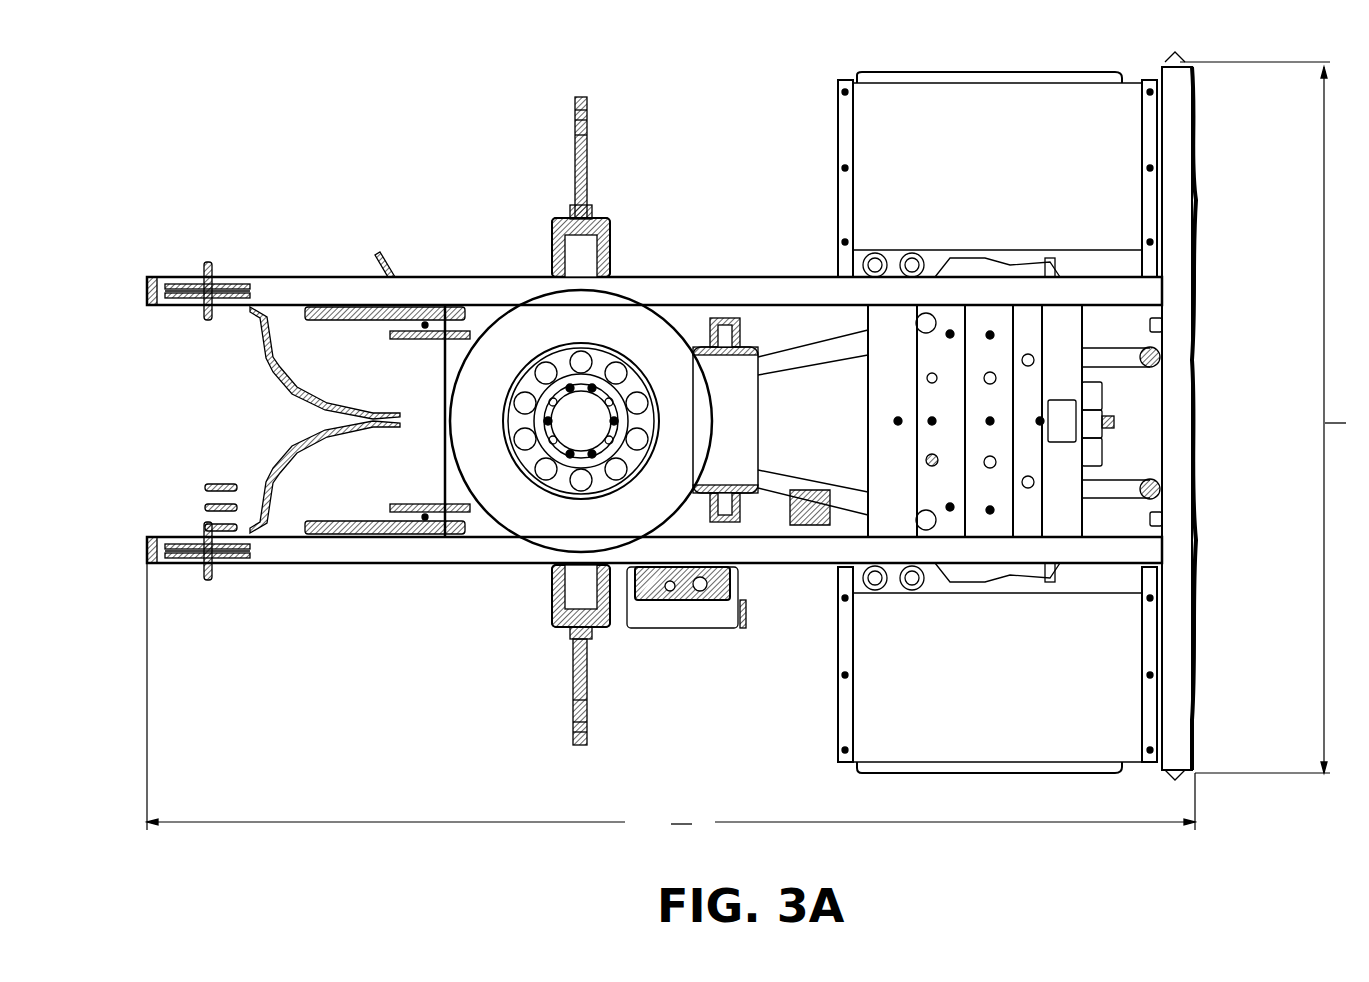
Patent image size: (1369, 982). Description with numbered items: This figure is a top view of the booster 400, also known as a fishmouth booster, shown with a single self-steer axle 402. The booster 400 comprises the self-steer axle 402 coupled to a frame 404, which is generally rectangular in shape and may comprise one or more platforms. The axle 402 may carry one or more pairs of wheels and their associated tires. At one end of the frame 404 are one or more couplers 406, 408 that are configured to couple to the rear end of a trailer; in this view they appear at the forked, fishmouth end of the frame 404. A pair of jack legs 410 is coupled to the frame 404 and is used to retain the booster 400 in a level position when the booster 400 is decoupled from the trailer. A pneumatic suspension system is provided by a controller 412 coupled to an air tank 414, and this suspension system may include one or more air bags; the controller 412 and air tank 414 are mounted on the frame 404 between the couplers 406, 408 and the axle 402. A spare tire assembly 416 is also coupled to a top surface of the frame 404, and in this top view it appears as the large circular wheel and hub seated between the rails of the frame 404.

The booster 400 is at (240, 148).
The self-steer axle 402 is at (975, 80).
The frame 404 is at (770, 290).
The coupler 406 is at (160, 290).
The coupler 408 is at (380, 532).
The jack legs 410 is at (588, 695).
The controller 412 is at (680, 600).
The air tank 414 is at (730, 452).
The spare tire assembly 416 is at (560, 318).